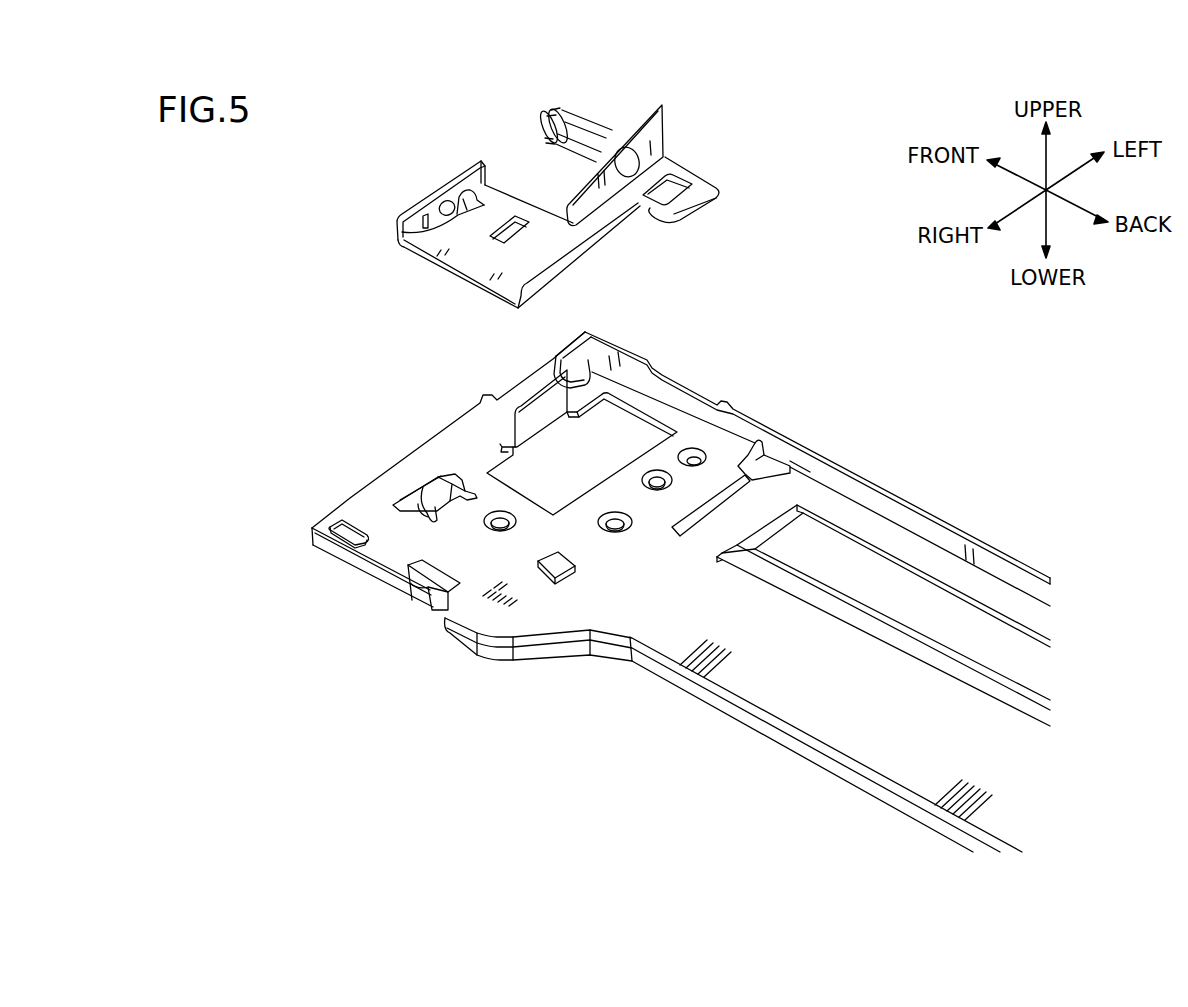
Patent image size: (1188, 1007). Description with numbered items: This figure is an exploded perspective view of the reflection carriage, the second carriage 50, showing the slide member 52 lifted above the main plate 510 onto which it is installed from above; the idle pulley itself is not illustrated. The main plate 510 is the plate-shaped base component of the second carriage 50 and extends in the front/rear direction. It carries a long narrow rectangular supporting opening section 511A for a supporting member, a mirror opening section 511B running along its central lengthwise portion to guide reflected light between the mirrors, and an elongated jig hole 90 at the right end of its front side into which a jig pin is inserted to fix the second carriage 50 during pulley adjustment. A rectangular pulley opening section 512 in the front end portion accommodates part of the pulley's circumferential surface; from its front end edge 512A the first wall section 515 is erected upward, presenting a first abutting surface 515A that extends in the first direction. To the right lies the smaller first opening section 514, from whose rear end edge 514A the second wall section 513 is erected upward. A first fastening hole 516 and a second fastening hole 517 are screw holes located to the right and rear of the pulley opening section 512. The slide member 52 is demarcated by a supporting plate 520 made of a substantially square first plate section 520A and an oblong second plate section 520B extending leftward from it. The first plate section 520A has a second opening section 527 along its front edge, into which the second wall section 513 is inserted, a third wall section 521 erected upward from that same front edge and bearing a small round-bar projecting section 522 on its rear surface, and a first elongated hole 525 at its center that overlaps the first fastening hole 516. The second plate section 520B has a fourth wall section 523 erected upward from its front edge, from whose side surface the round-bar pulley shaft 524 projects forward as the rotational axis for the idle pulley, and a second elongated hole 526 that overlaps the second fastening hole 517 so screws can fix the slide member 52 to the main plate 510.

The second carriage 50 is at (692, 701).
The slide member 52 is at (592, 190).
The jig hole 90 is at (445, 616).
The main plate 510 is at (415, 460).
The supporting opening section 511A is at (770, 462).
The mirror opening section 511B is at (850, 557).
The pulley opening section 512 is at (630, 423).
The end edge 512A is at (490, 460).
The second wall section 513 is at (430, 508).
The first opening section 514 is at (415, 498).
The end edge 514A is at (450, 530).
The first wall section 515 is at (553, 362).
The first abutting surface 515A is at (542, 413).
The first fastening hole 516 is at (484, 525).
The second fastening hole 517 is at (740, 460).
The supporting plate 520 is at (640, 228).
The first plate section 520A is at (538, 244).
The second plate section 520B is at (734, 195).
The third wall section 521 is at (407, 162).
The projecting section 522 is at (438, 211).
The fourth wall section 523 is at (665, 117).
The pulley shaft 524 is at (582, 117).
The first elongated hole 525 is at (498, 241).
The second elongated hole 526 is at (682, 188).
The second opening section 527 is at (473, 206).